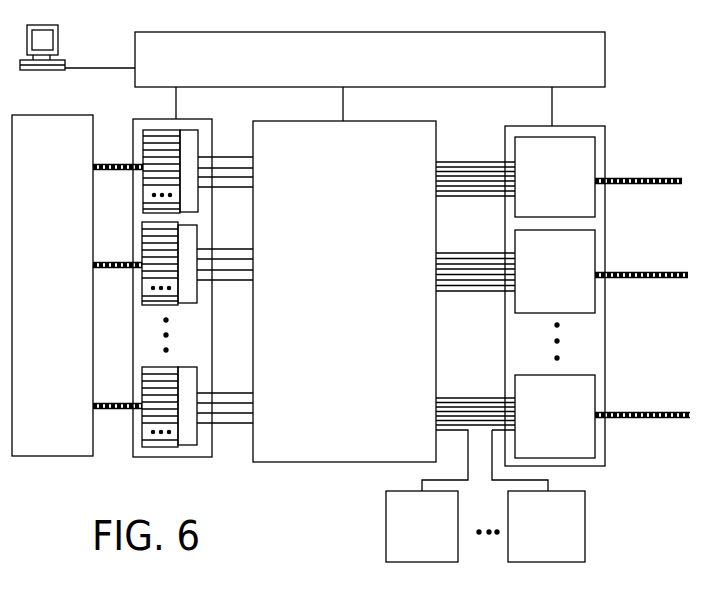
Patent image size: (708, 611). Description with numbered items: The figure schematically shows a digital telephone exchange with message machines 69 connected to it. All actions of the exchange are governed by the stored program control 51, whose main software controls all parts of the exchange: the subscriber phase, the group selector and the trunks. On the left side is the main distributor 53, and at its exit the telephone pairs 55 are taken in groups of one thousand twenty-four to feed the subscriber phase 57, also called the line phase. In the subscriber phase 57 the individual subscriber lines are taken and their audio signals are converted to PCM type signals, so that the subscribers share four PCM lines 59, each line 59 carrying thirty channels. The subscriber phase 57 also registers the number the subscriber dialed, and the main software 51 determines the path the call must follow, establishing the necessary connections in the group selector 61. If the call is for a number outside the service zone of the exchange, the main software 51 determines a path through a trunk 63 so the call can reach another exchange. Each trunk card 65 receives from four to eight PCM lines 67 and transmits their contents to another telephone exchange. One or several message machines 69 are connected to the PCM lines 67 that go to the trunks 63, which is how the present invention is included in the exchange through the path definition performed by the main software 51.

The stored program control 51 is at (434, 28).
The main distributor 53 is at (50, 114).
The telephone pairs 55 is at (112, 167).
The subscriber phase 57 is at (212, 457).
The PCM lines 59 is at (237, 187).
The group selector 61 is at (370, 465).
The trunk 63 is at (600, 125).
The trunk card 65 is at (597, 165).
The PCM lines 67 is at (485, 158).
The message machines 69 is at (404, 563).